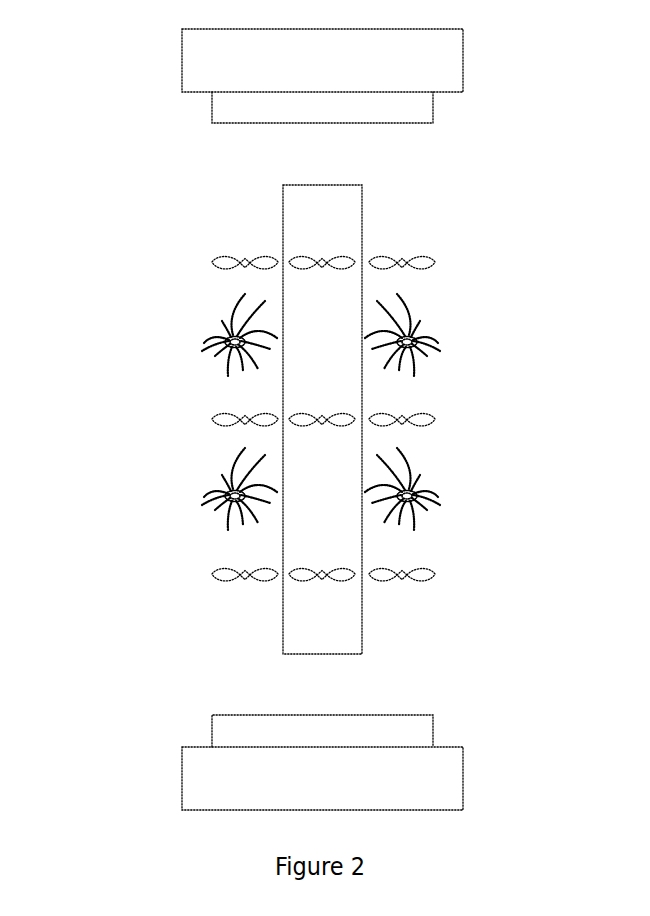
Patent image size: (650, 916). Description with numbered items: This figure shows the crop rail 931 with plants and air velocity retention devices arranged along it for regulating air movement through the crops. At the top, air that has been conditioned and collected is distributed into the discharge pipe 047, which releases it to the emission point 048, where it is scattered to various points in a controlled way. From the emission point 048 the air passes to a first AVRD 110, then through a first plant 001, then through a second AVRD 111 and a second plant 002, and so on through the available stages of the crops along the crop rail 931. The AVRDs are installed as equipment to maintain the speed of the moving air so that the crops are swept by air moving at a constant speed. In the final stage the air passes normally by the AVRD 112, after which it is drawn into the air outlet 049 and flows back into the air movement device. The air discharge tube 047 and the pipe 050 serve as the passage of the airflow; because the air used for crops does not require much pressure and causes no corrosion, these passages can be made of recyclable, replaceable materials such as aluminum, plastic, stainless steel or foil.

The discharge pipe 047 is at (463, 77).
The emission point 048 is at (212, 108).
The crop rail 931 is at (362, 225).
The first AVRD 110 is at (212, 262).
The second AVRD 111 is at (212, 419).
The AVRD 112 is at (212, 575).
The first plant 001 is at (437, 343).
The second plant 002 is at (437, 498).
The air outlet 049 is at (212, 732).
The pipe 050 is at (463, 793).